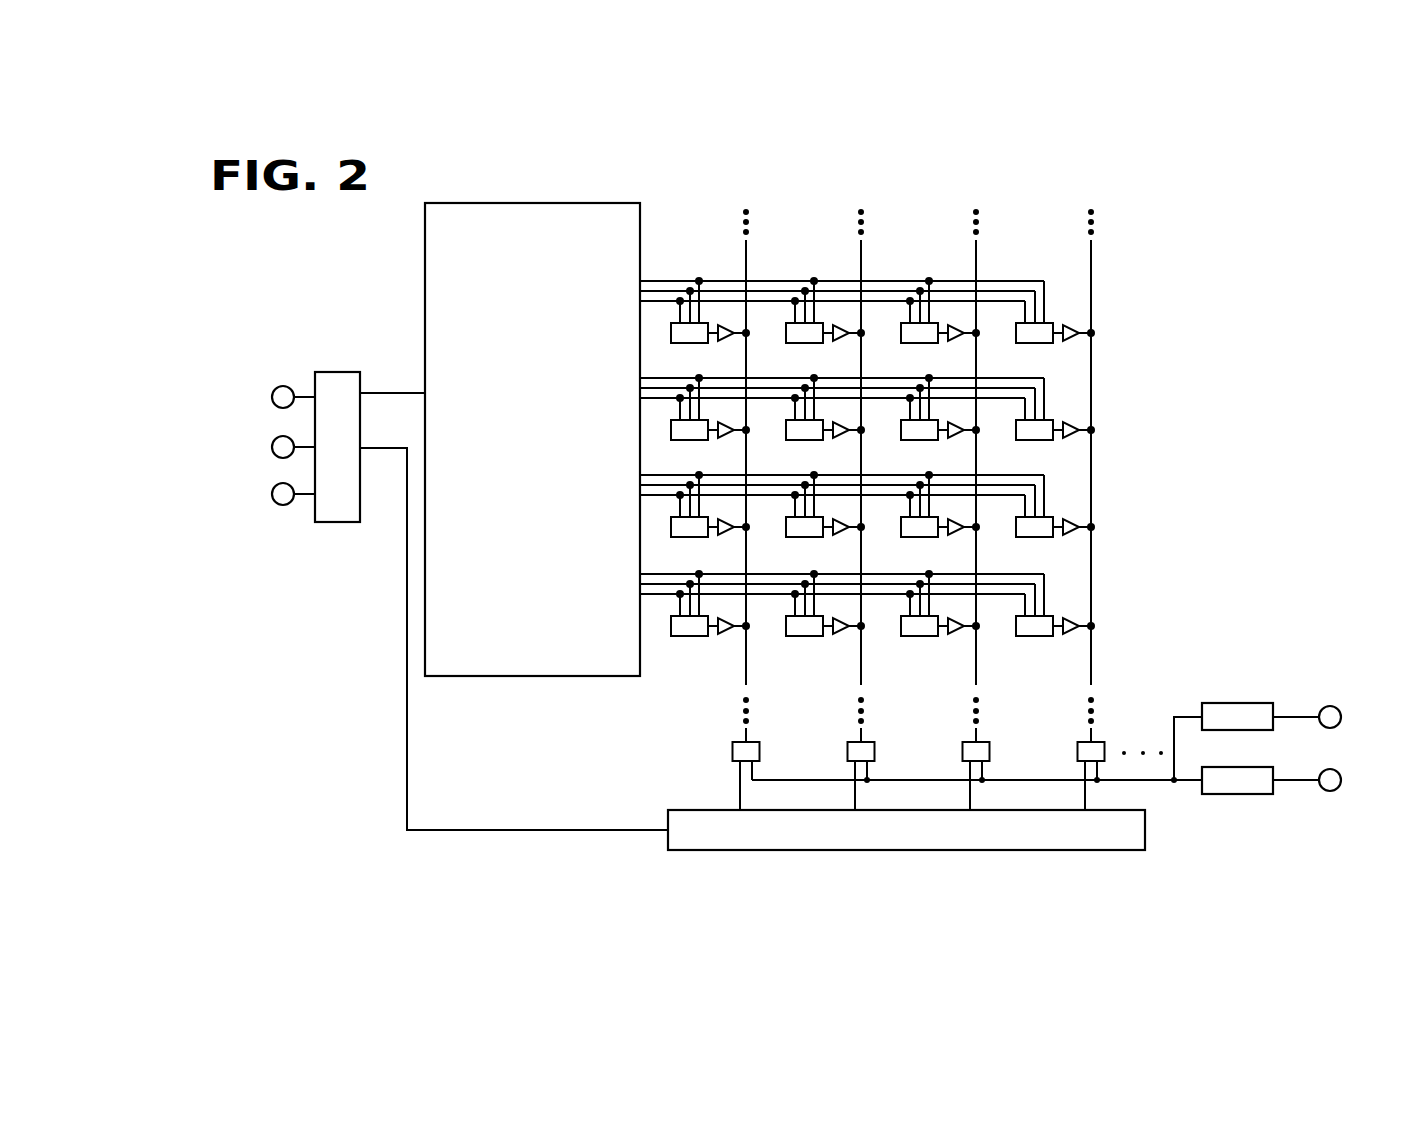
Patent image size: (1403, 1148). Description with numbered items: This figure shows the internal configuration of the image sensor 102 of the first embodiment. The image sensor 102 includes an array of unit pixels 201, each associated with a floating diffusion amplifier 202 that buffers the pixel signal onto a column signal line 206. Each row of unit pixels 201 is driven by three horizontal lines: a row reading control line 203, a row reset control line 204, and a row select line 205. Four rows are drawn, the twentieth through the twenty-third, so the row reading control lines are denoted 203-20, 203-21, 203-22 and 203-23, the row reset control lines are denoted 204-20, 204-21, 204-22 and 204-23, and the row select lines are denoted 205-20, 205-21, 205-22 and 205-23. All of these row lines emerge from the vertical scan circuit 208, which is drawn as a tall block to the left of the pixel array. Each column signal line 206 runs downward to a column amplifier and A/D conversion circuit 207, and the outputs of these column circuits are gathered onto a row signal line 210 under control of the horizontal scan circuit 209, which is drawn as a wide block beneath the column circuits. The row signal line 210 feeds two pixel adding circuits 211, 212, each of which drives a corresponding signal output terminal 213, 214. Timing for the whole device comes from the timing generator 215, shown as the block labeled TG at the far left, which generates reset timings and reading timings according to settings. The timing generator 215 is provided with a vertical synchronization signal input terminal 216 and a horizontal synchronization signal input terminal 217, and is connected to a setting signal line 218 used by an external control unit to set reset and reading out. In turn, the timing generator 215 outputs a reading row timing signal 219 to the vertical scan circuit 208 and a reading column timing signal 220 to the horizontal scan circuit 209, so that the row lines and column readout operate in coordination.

The image sensor 102 is at (1226, 224).
The unit pixel 201 is at (671, 333).
The floating diffusion amplifier 202 is at (727, 324).
The row reading control line 203 is at (792, 281).
The row reset control line 204 is at (905, 291).
The row select line 205 is at (1021, 301).
The row reading control line of the 20th row 203-20 is at (799, 255).
The row reset control line of the 20th row 204-20 is at (795, 260).
The row select line of the 20th row 205-20 is at (799, 270).
The row reading control line of the 21st row 203-21 is at (640, 378).
The row reset control line of the 21st row 204-21 is at (640, 388).
The row select line of the 21st row 205-21 is at (640, 398).
The row reading control line of the 22nd row 203-22 is at (640, 475).
The row reset control line of the 22nd row 204-22 is at (640, 485).
The row select line of the 22nd row 205-22 is at (640, 495).
The row reading control line of the 23rd row 203-23 is at (640, 574).
The row reset control line of the 23rd row 204-23 is at (640, 584).
The row select line of the 23rd row 205-23 is at (640, 594).
The column signal line 206 is at (746, 672).
The column amplifier and A/D conversion circuit 207 is at (733, 752).
The vertical scan circuit 208 is at (597, 203).
The horizontal scan circuit 209 is at (1032, 851).
The row signal line 210 is at (912, 779).
The pixel adding circuit 211 is at (1238, 795).
The pixel adding circuit 212 is at (1243, 702).
The signal output terminal 213 is at (1329, 791).
The signal output terminal 214 is at (1330, 706).
The timing generator 215 is at (315, 378).
The vertical synchronization signal input terminal 216 is at (272, 397).
The horizontal synchronization signal input terminal 217 is at (272, 447).
The setting signal line 218 is at (272, 494).
The reading row timing signal 219 is at (393, 393).
The reading column timing signal 220 is at (393, 448).